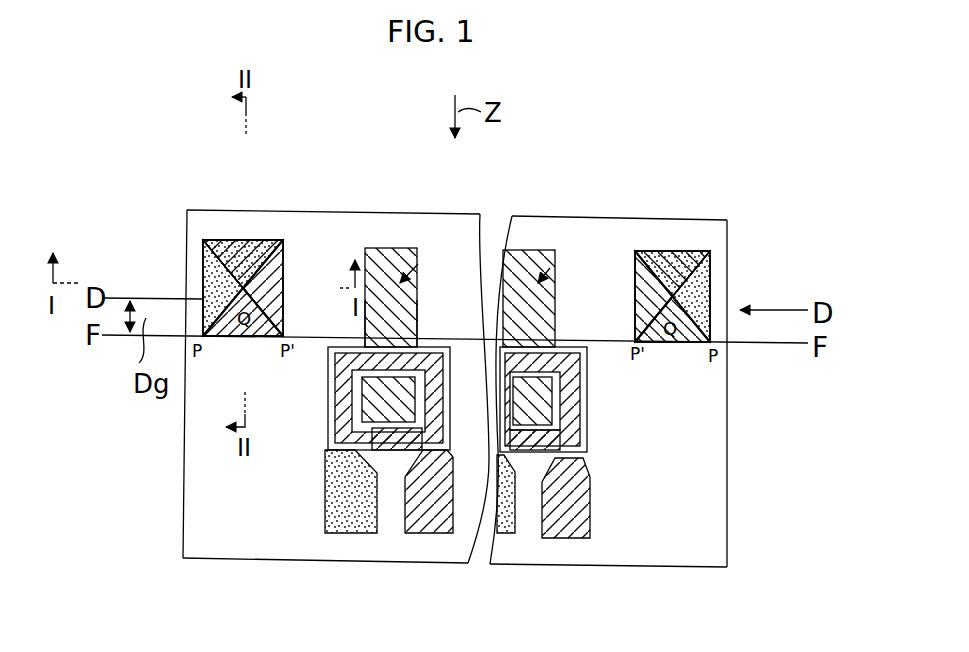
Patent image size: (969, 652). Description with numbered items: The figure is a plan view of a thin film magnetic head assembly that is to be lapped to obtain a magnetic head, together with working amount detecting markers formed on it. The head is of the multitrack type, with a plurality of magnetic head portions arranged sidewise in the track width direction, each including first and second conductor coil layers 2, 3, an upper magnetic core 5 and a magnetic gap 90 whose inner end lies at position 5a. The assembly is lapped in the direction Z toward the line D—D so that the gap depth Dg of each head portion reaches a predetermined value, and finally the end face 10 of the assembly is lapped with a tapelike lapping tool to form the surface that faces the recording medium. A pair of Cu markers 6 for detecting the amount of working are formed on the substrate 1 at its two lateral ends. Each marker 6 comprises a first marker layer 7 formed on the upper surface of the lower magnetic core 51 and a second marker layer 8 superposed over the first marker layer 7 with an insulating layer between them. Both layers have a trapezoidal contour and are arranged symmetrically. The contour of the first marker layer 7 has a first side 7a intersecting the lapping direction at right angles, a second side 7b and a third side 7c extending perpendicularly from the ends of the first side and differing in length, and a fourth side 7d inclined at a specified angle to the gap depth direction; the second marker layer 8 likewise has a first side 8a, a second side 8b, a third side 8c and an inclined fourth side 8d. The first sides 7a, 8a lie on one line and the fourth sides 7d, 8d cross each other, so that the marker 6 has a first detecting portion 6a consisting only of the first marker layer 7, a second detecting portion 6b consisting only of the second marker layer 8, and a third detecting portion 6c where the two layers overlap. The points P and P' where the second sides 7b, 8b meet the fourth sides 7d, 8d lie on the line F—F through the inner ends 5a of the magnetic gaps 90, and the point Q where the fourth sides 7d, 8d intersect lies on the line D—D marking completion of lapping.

The substrate 1 is at (185, 456).
The first conductor coil layer 2 is at (353, 525).
The second conductor coil layer 3 is at (428, 532).
The upper magnetic core 5 is at (391, 248).
The inner end of magnetic gap 5a is at (392, 347).
The marker 6 is at (252, 219).
The first detecting portion 6a is at (203, 284).
The second detecting portion 6b is at (286, 286).
The third detecting portion 6c is at (218, 246).
The first marker layer 7 is at (203, 318).
The first side 7a is at (236, 240).
The second side 7b is at (203, 258).
The third side 7c is at (285, 250).
The fourth side 7d is at (228, 337).
The second marker layer 8 is at (264, 337).
The first side 8a is at (255, 240).
The second side 8b is at (286, 299).
The third side 8c is at (203, 243).
The fourth side 8d is at (274, 337).
The end face 10 is at (452, 212).
The lower magnetic core 51 is at (242, 540).
The magnetic gap 90 is at (420, 262).